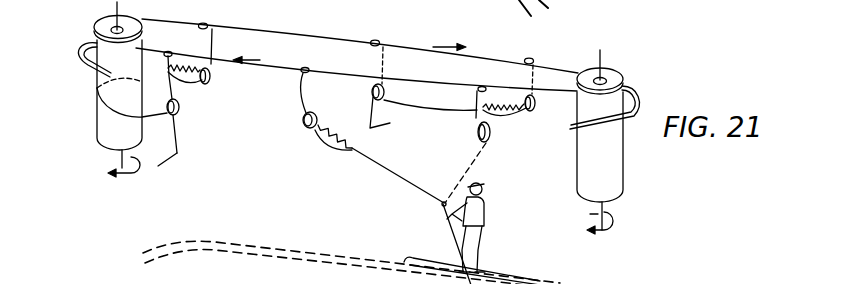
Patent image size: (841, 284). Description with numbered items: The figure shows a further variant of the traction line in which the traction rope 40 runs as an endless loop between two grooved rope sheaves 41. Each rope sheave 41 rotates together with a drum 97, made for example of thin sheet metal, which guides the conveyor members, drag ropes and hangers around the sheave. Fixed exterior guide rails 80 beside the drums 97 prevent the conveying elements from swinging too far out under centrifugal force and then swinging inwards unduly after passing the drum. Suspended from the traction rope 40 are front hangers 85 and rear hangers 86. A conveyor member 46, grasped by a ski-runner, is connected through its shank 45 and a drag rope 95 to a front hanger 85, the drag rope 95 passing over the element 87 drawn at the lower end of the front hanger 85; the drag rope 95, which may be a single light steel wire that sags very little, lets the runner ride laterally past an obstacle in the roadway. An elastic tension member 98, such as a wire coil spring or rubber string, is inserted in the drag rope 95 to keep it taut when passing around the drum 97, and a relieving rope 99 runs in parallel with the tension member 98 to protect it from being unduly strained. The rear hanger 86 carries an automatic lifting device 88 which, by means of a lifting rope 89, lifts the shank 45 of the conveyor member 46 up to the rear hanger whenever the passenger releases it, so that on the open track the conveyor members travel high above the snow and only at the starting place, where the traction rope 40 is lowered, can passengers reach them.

The traction rope 40 is at (279, 71).
The grooved rope sheave 41 is at (98, 25).
The shank 45 is at (177, 137).
The conveyor member 46 is at (171, 160).
The guide rail 80 is at (80, 50).
The front hanger 85 is at (300, 100).
The rear hanger 86 is at (168, 78).
The pulley 87 is at (303, 124).
The automatic lifting device 88 is at (182, 115).
The lifting rope 89 is at (478, 155).
The drag rope 95 is at (152, 119).
The drum 97 is at (97, 124).
The elastic tension member 98 is at (330, 133).
The relieving rope 99 is at (195, 81).